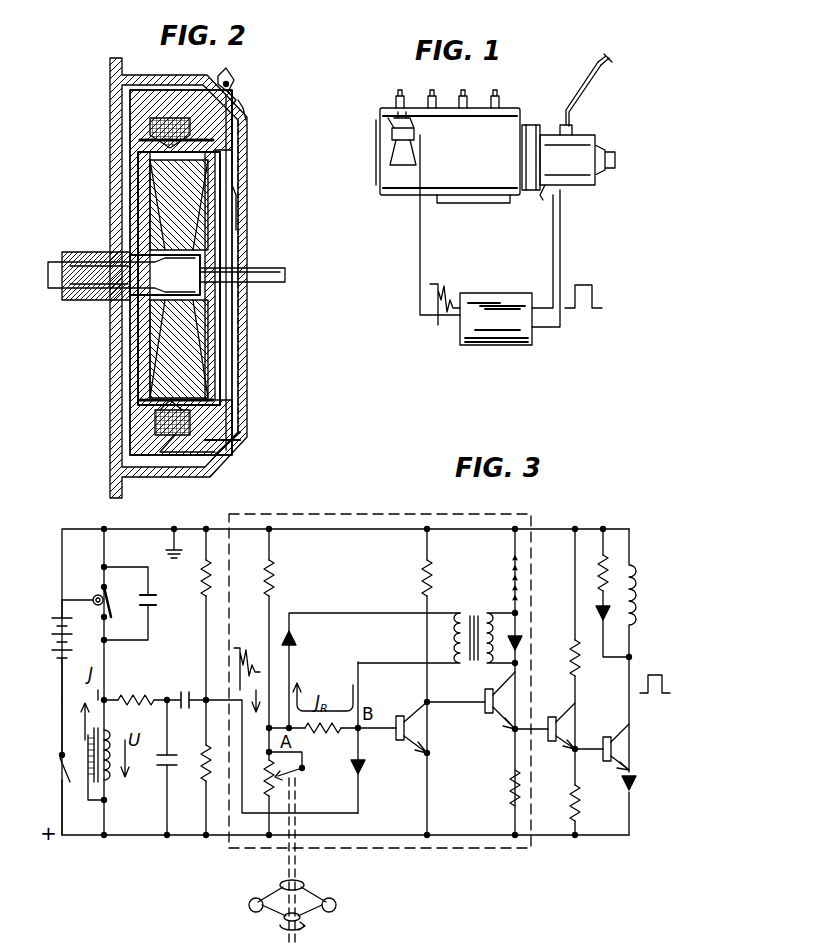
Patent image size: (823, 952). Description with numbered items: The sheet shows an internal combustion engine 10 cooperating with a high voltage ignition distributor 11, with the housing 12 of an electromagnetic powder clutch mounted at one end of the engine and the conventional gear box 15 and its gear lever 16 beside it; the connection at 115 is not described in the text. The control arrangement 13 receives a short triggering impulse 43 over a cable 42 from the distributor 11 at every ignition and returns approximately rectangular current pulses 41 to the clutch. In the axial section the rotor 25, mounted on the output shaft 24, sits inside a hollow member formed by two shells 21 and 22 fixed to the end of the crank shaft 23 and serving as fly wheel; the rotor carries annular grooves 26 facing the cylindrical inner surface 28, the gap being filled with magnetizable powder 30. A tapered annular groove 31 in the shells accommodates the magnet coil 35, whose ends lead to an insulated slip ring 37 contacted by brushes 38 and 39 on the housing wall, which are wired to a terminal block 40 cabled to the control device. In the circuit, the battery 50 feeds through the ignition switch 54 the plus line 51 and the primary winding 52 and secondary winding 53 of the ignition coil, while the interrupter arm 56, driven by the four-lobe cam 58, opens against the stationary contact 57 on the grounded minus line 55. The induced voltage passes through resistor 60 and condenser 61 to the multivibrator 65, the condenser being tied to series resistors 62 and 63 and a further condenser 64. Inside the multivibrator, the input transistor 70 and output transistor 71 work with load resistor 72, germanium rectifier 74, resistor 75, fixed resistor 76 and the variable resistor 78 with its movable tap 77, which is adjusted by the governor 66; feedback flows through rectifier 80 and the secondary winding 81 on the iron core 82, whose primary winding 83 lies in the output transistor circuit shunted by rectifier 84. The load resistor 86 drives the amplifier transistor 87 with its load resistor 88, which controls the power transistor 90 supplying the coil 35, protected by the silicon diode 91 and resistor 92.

In FIG. 1, the internal combustion engine 10 is at (512, 112).
In FIG. 1, the distributor 11 is at (392, 148).
In FIG. 1, the housing 12 is at (535, 125).
In FIG. 2, the housing 12 is at (248, 325).
In FIG. 1, the control arrangement 13 is at (515, 300).
In FIG. 1, the gear box 15 is at (590, 150).
In FIG. 1, the gear lever 16 is at (588, 95).
In FIG. 1, the sensor connection 115 is at (612, 58).
In FIG. 2, the shell 21 is at (140, 420).
In FIG. 2, the shell 22 is at (230, 445).
In FIG. 2, the crank shaft 23 is at (65, 252).
In FIG. 2, the output shaft 24 is at (262, 270).
In FIG. 2, the rotor 25 is at (190, 368).
In FIG. 2, the annular grooves 26 is at (150, 418).
In FIG. 2, the cylindrical inner surface 28 is at (232, 440).
In FIG. 2, the magnetizable powder 30 is at (215, 398).
In FIG. 2, the annular groove 31 is at (185, 478).
In FIG. 2, the magnet coil 35 is at (232, 438).
In FIG. 3, the magnet coil 35 is at (638, 600).
In FIG. 2, the slip ring 37 is at (222, 410).
In FIG. 2, the brush 38 is at (247, 117).
In FIG. 2, the brush 39 is at (238, 140).
In FIG. 1, the terminal block 40 is at (543, 200).
In FIG. 2, the terminal block 40 is at (238, 84).
In FIG. 1, the current pulses 41 is at (600, 300).
In FIG. 3, the current pulses 41 is at (662, 672).
In FIG. 1, the cable 42 is at (418, 236).
In FIG. 1, the triggering impulse 43 is at (442, 283).
In FIG. 3, the triggering impulse 43 is at (238, 642).
In FIG. 3, the battery 50 is at (52, 640).
In FIG. 3, the plus line 51 is at (185, 835).
In FIG. 3, the primary winding 52 is at (108, 780).
In FIG. 3, the secondary winding 53 is at (90, 795).
In FIG. 3, the ignition switch 54 is at (52, 748).
In FIG. 2, the minus line 55 is at (170, 478).
In FIG. 3, the minus line 55 is at (150, 529).
In FIG. 3, the interrupter arm 56 is at (110, 612).
In FIG. 3, the stationary contact 57 is at (96, 585).
In FIG. 3, the four-lobe cam 58 is at (65, 598).
In FIG. 3, the resistor 60 is at (138, 690).
In FIG. 3, the condenser 61 is at (185, 690).
In FIG. 3, the resistor 62 is at (200, 578).
In FIG. 3, the resistor 63 is at (200, 768).
In FIG. 3, the condenser 64 is at (160, 762).
In FIG. 3, the multivibrator 65 is at (400, 514).
In FIG. 3, the governor 66 is at (300, 892).
In FIG. 3, the input transistor 70 is at (412, 735).
In FIG. 3, the output transistor 71 is at (496, 705).
In FIG. 3, the resistor 72 is at (421, 575).
In FIG. 3, the germanium rectifier 74 is at (366, 772).
In FIG. 3, the resistor 75 is at (325, 735).
In FIG. 3, the fixed resistor 76 is at (275, 578).
In FIG. 3, the movable tap 77 is at (298, 776).
In FIG. 3, the variable resistor 78 is at (266, 765).
In FIG. 3, the germanium rectifier 80 is at (298, 652).
In FIG. 3, the secondary winding 81 is at (452, 655).
In FIG. 3, the iron core 82 is at (476, 612).
In FIG. 3, the primary winding 83 is at (490, 664).
In FIG. 3, the germanium rectifier 84 is at (523, 645).
In FIG. 3, the load resistor 86 is at (509, 790).
In FIG. 3, the amplifier transistor 87 is at (558, 725).
In FIG. 3, the load resistor 88 is at (580, 800).
In FIG. 3, the power transistor 90 is at (614, 746).
In FIG. 3, the silicon diode 91 is at (579, 650).
In FIG. 3, the resistor 92 is at (600, 560).